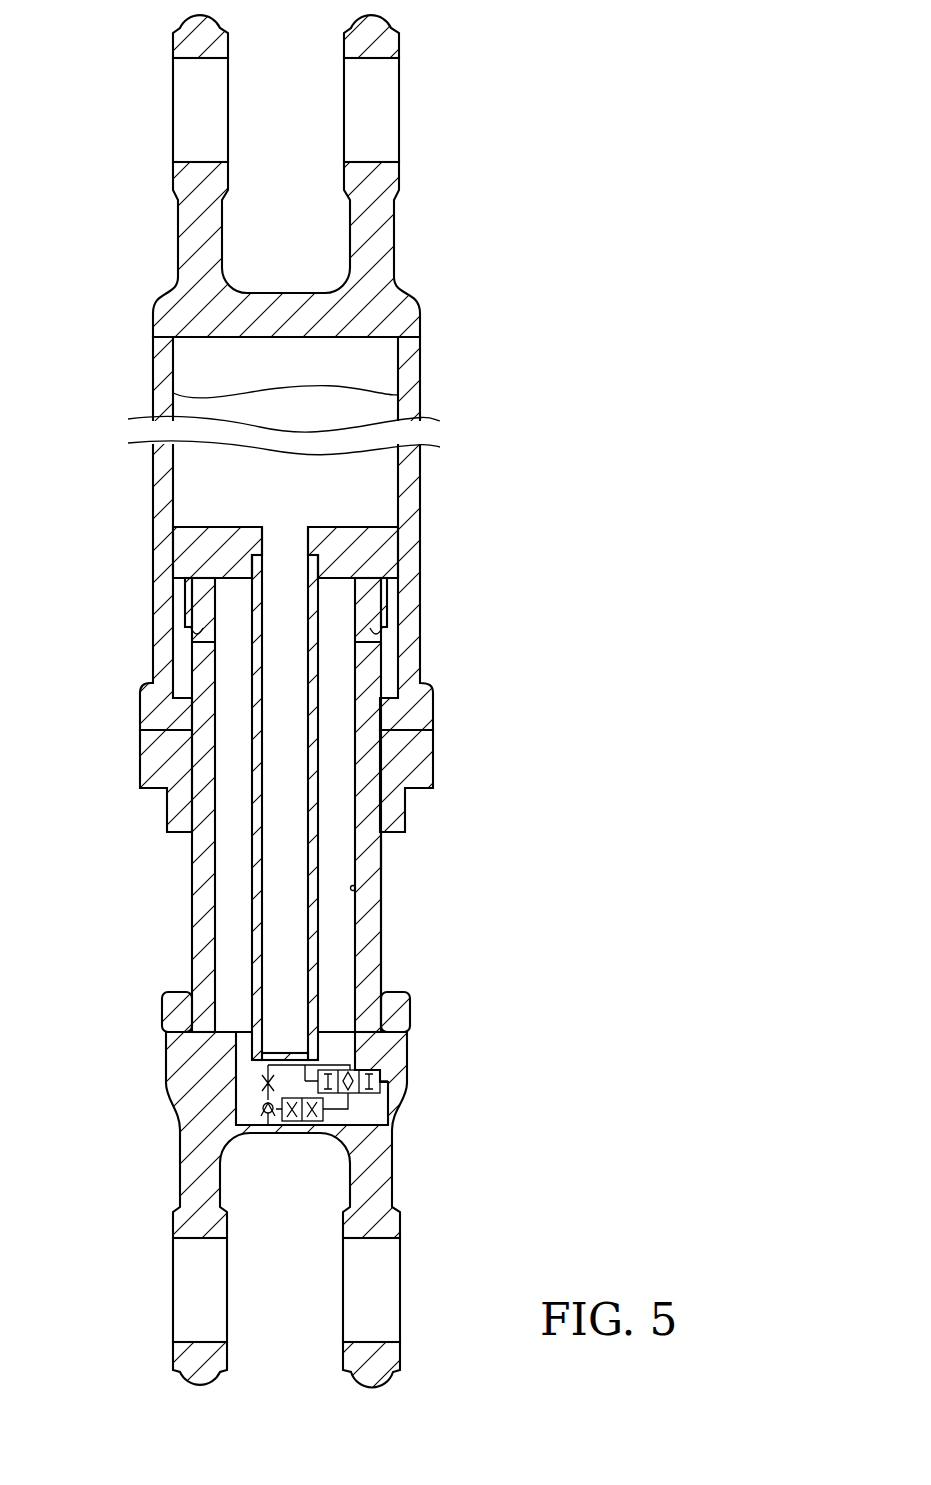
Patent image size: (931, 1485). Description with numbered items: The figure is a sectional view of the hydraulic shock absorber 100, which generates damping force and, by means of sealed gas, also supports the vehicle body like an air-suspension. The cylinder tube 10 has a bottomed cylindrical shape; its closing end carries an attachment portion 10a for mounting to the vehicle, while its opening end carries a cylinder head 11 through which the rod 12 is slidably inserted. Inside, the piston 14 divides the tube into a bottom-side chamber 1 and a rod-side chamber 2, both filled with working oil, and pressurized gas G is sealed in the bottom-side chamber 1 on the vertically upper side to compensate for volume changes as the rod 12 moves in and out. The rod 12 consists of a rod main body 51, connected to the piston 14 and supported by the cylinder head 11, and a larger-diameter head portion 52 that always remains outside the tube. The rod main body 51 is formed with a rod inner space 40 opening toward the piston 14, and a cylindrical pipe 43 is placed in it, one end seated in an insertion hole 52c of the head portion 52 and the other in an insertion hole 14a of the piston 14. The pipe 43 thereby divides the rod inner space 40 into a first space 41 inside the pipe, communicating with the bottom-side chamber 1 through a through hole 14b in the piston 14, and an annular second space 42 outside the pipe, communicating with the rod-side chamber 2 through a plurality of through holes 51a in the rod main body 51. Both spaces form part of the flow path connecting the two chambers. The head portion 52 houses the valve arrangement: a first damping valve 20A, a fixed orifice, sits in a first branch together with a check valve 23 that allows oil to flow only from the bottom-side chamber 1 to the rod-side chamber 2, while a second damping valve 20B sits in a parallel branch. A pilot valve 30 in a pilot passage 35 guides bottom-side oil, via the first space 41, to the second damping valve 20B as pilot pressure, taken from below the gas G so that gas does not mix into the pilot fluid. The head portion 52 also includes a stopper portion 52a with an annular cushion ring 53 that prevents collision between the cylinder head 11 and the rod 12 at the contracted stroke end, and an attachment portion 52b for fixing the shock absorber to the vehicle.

The hydraulic shock absorber 100 is at (479, 171).
The attachment portion 10a is at (198, 158).
The cylinder tube 10 is at (412, 404).
The bottom-side chamber 1 is at (200, 477).
The gas G is at (197, 361).
The rod-side chamber 2 is at (178, 664).
The cylinder head 11 is at (413, 768).
The piston 14 is at (377, 542).
The insertion hole 14a is at (318, 560).
The through hole 14b is at (287, 537).
The second space 42 is at (223, 722).
The pipe 43 is at (320, 952).
The rod main body 51 is at (370, 905).
The through holes 51a is at (192, 632).
The first space 41 is at (283, 854).
The insertion hole 52c is at (254, 1047).
The rod inner space 40 is at (356, 888).
The rod 12 is at (388, 853).
The stopper portion 52a is at (163, 1021).
The cushion ring 53 is at (172, 1003).
The head portion 52 is at (395, 1100).
The attachment portion 52b is at (370, 1240).
The pilot valve 30 is at (372, 1070).
The pilot passage 35 is at (362, 1060).
The first damping valve 20A is at (265, 1087).
The check valve 23 is at (264, 1112).
The second damping valve 20B is at (308, 1130).